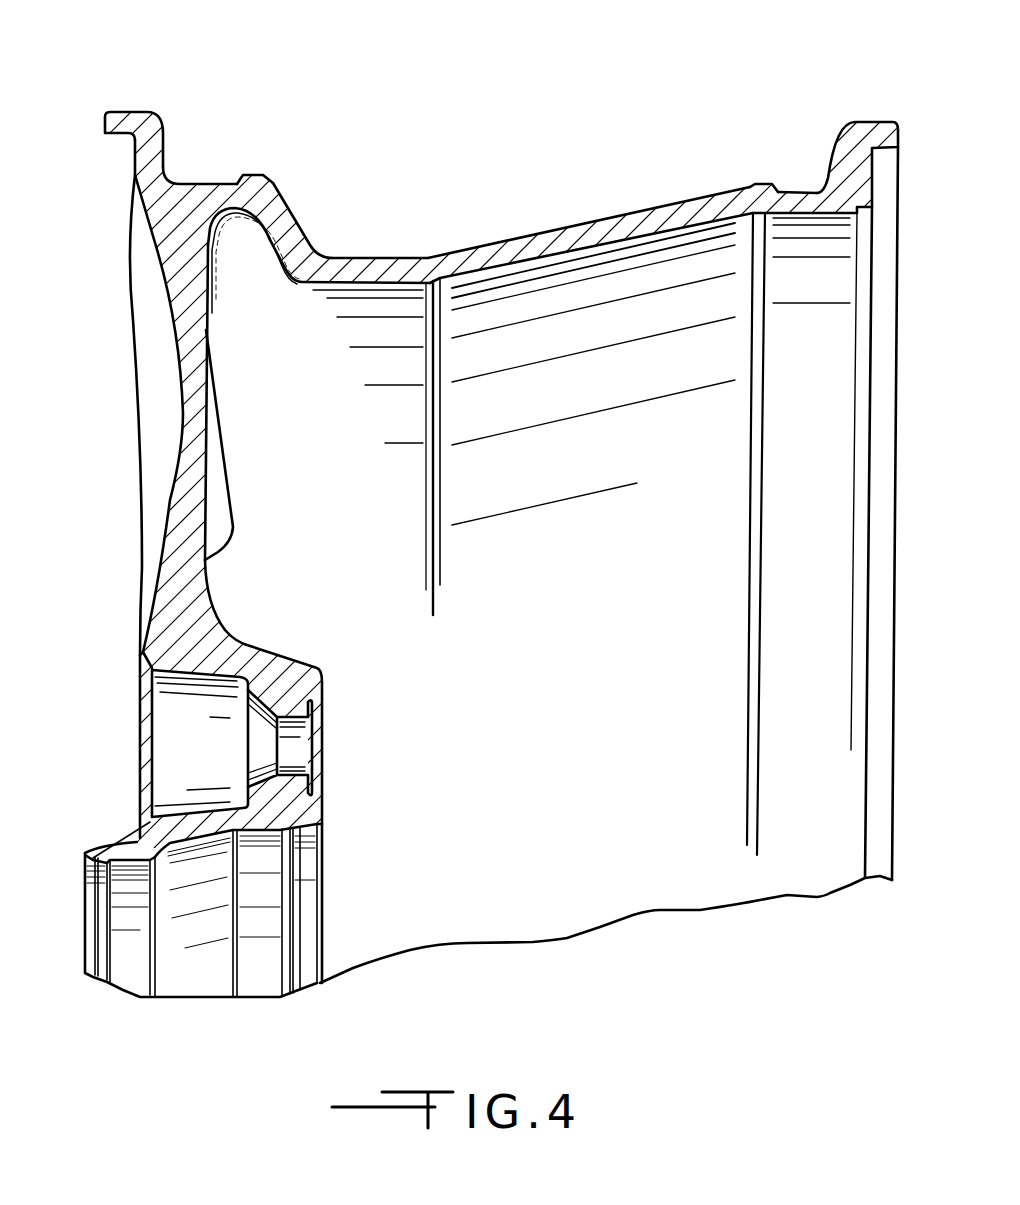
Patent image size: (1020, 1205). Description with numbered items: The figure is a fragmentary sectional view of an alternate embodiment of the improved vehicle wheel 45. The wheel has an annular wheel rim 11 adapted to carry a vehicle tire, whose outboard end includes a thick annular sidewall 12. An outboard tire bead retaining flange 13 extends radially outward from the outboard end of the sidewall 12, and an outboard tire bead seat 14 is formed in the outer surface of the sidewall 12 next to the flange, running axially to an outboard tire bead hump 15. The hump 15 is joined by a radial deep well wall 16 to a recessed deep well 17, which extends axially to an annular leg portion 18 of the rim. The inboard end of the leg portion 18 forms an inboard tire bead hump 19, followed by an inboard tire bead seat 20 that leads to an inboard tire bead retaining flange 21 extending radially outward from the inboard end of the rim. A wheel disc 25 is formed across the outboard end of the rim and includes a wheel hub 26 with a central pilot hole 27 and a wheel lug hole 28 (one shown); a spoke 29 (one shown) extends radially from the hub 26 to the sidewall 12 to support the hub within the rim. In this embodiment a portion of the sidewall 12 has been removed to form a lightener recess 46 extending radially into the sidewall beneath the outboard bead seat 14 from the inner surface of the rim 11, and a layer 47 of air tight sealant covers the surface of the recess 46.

The wheel rim 11 is at (476, 222).
The sidewall 12 is at (165, 218).
The outboard tire bead retaining flange 13 is at (137, 123).
The outboard tire bead seat 14 is at (199, 182).
The outboard tire bead hump 15 is at (260, 175).
The deep well wall 16 is at (298, 208).
The deep well 17 is at (363, 257).
The leg portion 18 is at (560, 238).
The inboard tire bead hump 19 is at (757, 180).
The inboard tire bead seat 20 is at (798, 193).
The inboard tire bead retaining flange 21 is at (850, 140).
The wheel disc 25 is at (115, 623).
The wheel hub 26 is at (253, 655).
The central pilot hole 27 is at (342, 894).
The wheel lug hole 28 is at (337, 712).
The spoke 29 is at (198, 417).
The vehicle wheel 45 is at (466, 158).
The lightener recess 46 is at (301, 314).
The sealant layer 47 is at (215, 262).